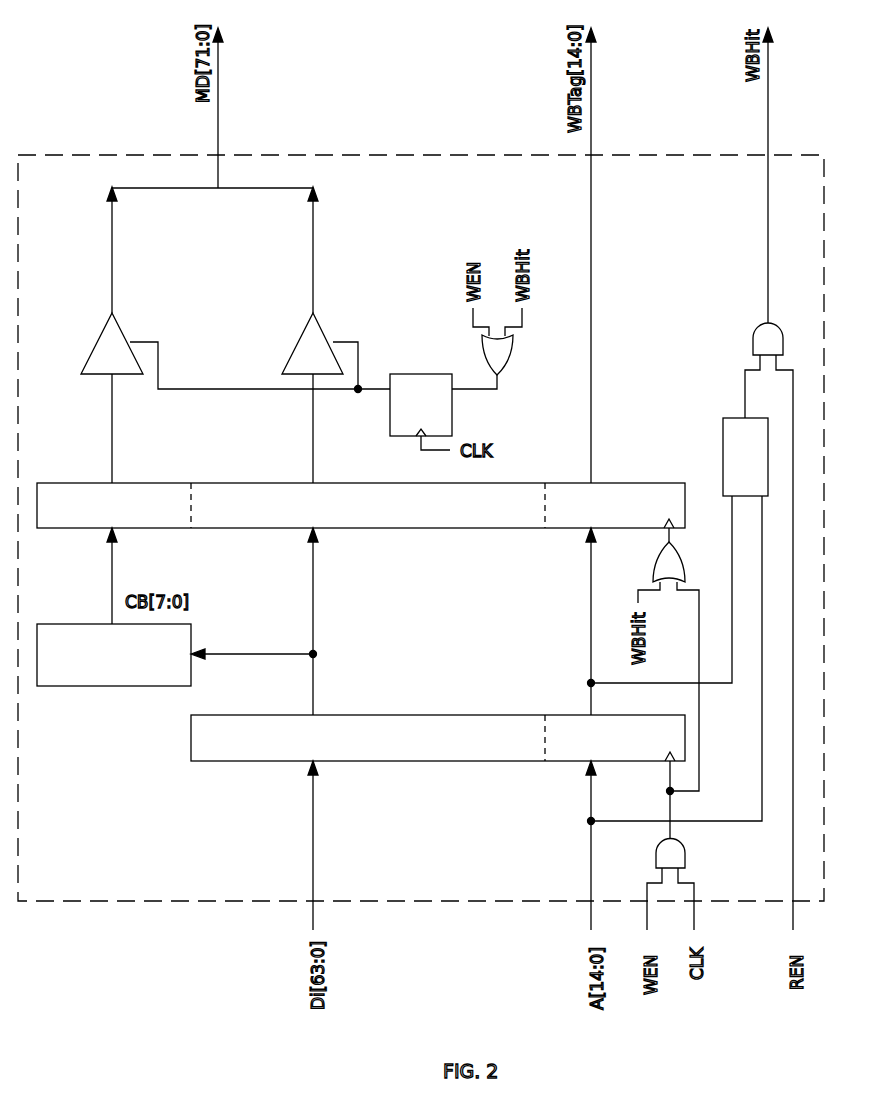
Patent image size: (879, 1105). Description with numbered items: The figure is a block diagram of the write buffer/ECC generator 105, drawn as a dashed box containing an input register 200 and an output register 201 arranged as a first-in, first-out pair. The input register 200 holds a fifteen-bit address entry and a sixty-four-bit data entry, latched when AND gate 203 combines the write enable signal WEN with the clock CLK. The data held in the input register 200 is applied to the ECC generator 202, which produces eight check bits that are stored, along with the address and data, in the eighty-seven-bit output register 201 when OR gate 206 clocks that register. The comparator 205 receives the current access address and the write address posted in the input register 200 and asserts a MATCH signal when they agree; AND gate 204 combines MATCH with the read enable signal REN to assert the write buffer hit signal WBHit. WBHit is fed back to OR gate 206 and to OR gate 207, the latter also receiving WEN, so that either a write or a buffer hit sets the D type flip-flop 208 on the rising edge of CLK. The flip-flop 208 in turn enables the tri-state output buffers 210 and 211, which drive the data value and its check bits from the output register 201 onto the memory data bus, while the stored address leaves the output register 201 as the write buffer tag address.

The write buffer/ECC generator 105 is at (108, 153).
The input register 200 is at (191, 747).
The output register 201 is at (283, 483).
The ECC generator 202 is at (182, 666).
The AND gate 203 is at (687, 858).
The AND gate 204 is at (752, 347).
The comparator 205 is at (722, 457).
The OR gate 206 is at (683, 570).
The OR gate 207 is at (515, 348).
The D type flip-flop 208 is at (437, 421).
The tri-state output buffer 210 is at (290, 357).
The tri-state output buffer 211 is at (88, 357).